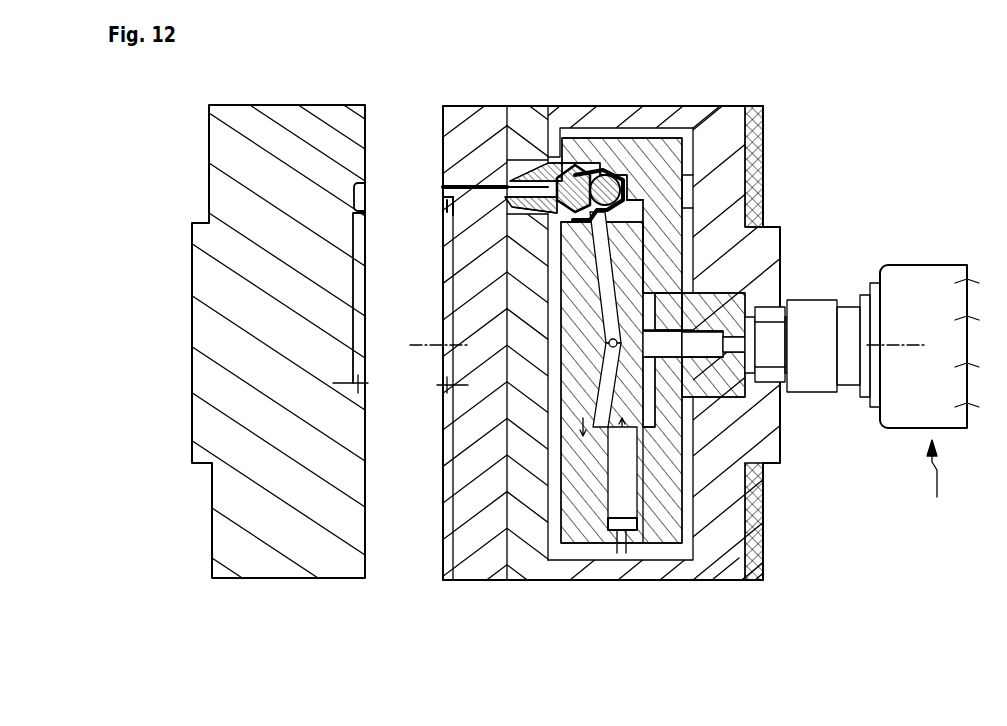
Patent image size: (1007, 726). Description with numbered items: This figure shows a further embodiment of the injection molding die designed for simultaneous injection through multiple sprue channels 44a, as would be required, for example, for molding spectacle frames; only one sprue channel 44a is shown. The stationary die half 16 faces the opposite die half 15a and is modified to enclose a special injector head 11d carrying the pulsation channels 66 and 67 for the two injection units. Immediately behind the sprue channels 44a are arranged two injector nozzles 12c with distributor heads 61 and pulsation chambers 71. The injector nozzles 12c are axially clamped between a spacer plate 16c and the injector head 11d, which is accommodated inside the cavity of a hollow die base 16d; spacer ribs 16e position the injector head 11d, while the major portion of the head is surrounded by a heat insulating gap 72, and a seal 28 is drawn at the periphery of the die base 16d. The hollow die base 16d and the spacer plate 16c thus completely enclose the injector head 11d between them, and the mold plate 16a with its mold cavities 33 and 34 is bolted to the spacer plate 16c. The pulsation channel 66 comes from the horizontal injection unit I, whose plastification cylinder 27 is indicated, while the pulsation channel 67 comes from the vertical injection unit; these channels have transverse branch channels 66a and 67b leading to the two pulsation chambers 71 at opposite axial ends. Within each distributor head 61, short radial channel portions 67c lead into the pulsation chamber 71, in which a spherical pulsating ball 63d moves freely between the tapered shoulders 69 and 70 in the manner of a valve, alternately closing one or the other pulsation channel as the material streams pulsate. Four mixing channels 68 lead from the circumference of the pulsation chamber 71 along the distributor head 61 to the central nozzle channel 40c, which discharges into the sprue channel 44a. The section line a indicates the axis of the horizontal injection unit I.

The fixed mold half 15a is at (273, 562).
The mold cavity 33 is at (356, 229).
The stationary die half 16 is at (592, 600).
The mold plate 16a is at (457, 557).
The spacer plate 16c is at (523, 557).
The hollow die base 16d is at (730, 562).
The spacer ribs 16e is at (765, 542).
The seal ring 28 is at (758, 513).
The transverse branch channel 67b is at (762, 470).
The injector head 11d is at (665, 160).
The tapered shoulder 70 is at (688, 178).
The transverse branch channel 66a is at (640, 197).
The pulsation chamber 71 is at (583, 212).
The radial channel portion 67c is at (557, 220).
The pulsation channel 67 is at (685, 405).
The heat insulating gap 72 is at (638, 555).
The pulsation channel 66 is at (770, 232).
The plastification cylinder 27 is at (925, 290).
The sprue channel 44a is at (480, 186).
The tapered shoulder 69 is at (512, 178).
The mold cavity 34 is at (447, 210).
The mixing channel 68 is at (562, 170).
The ball seat 63d is at (618, 182).
The distributor head 61 is at (586, 172).
The nozzle channel 40c is at (513, 170).
The injector nozzle 12c is at (530, 172).
The axis a is at (665, 346).
The horizontal injection unit I is at (934, 484).